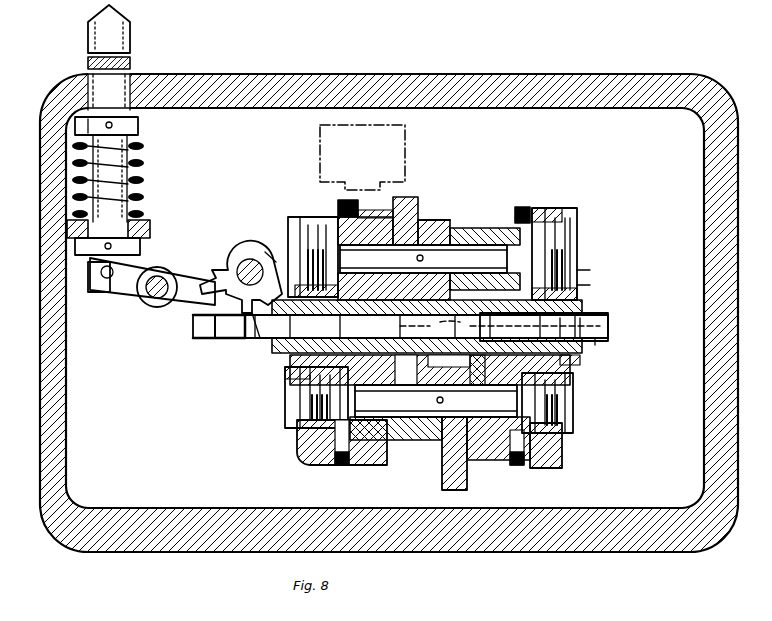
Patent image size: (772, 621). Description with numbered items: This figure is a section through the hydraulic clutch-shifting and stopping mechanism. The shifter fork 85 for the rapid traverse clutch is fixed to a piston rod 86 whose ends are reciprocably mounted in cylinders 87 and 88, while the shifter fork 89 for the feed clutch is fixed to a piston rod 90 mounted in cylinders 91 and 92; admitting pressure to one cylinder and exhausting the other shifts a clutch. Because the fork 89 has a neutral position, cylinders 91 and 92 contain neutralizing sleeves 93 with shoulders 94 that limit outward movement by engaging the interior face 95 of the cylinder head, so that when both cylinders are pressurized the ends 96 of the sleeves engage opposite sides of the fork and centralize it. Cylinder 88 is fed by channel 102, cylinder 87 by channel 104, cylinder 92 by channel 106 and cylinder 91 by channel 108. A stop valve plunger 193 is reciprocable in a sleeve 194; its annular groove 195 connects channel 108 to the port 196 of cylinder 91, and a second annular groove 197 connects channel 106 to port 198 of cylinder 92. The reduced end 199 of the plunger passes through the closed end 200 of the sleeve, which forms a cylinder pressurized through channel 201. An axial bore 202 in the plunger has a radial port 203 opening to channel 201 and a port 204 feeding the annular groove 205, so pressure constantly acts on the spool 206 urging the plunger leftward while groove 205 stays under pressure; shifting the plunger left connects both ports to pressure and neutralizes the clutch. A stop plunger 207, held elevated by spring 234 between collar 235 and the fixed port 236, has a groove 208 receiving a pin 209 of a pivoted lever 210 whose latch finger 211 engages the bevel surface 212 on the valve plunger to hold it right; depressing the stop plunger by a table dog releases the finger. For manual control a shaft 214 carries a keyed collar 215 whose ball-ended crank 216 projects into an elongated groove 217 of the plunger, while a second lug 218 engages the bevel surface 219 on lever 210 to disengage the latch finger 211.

The shifter fork 85 is at (442, 470).
The piston rod 86 is at (396, 420).
The cylinder 87 is at (297, 452).
The cylinder 88 is at (565, 456).
The shifter fork 89 is at (452, 240).
The piston rod 90 is at (465, 245).
The cylinder 91 is at (300, 206).
The cylinder 92 is at (550, 218).
The neutralizing sleeves 93 is at (403, 212).
The shoulders 94 is at (350, 210).
The interior face 95 is at (362, 214).
The ends of the sleeves 96 is at (412, 224).
The channel 102 is at (570, 372).
The channel 104 is at (288, 401).
The channel 106 is at (500, 390).
The channel 108 is at (292, 370).
The stop valve plunger 193 is at (224, 338).
The sleeve 194 is at (584, 306).
The annular groove 195 is at (284, 352).
The port 196 is at (298, 264).
The second annular groove 197 is at (578, 290).
The port 198 is at (578, 268).
The reduced end 199 is at (606, 332).
The end of the sleeve 200 is at (590, 320).
The channel 201 is at (572, 362).
The axial bore 202 is at (440, 322).
The radial port 203 is at (596, 342).
The port 204 is at (430, 369).
The annular groove 205 is at (464, 369).
The valve spool 206 is at (624, 276).
The stop plunger 207 is at (140, 192).
The groove 208 is at (95, 292).
The pin 209 is at (107, 280).
The pivoted lever 210 is at (180, 276).
The latch finger 211 is at (192, 318).
The bevel surface 212 is at (210, 338).
The shaft 214 is at (240, 262).
The collar 215 is at (252, 250).
The ball-ended crank 216 is at (242, 338).
The groove 217 is at (238, 340).
The second lug 218 is at (232, 286).
The bevel surface 219 is at (208, 284).
The spring 234 is at (140, 162).
The collar 235 is at (140, 126).
The fixed port 236 is at (142, 222).